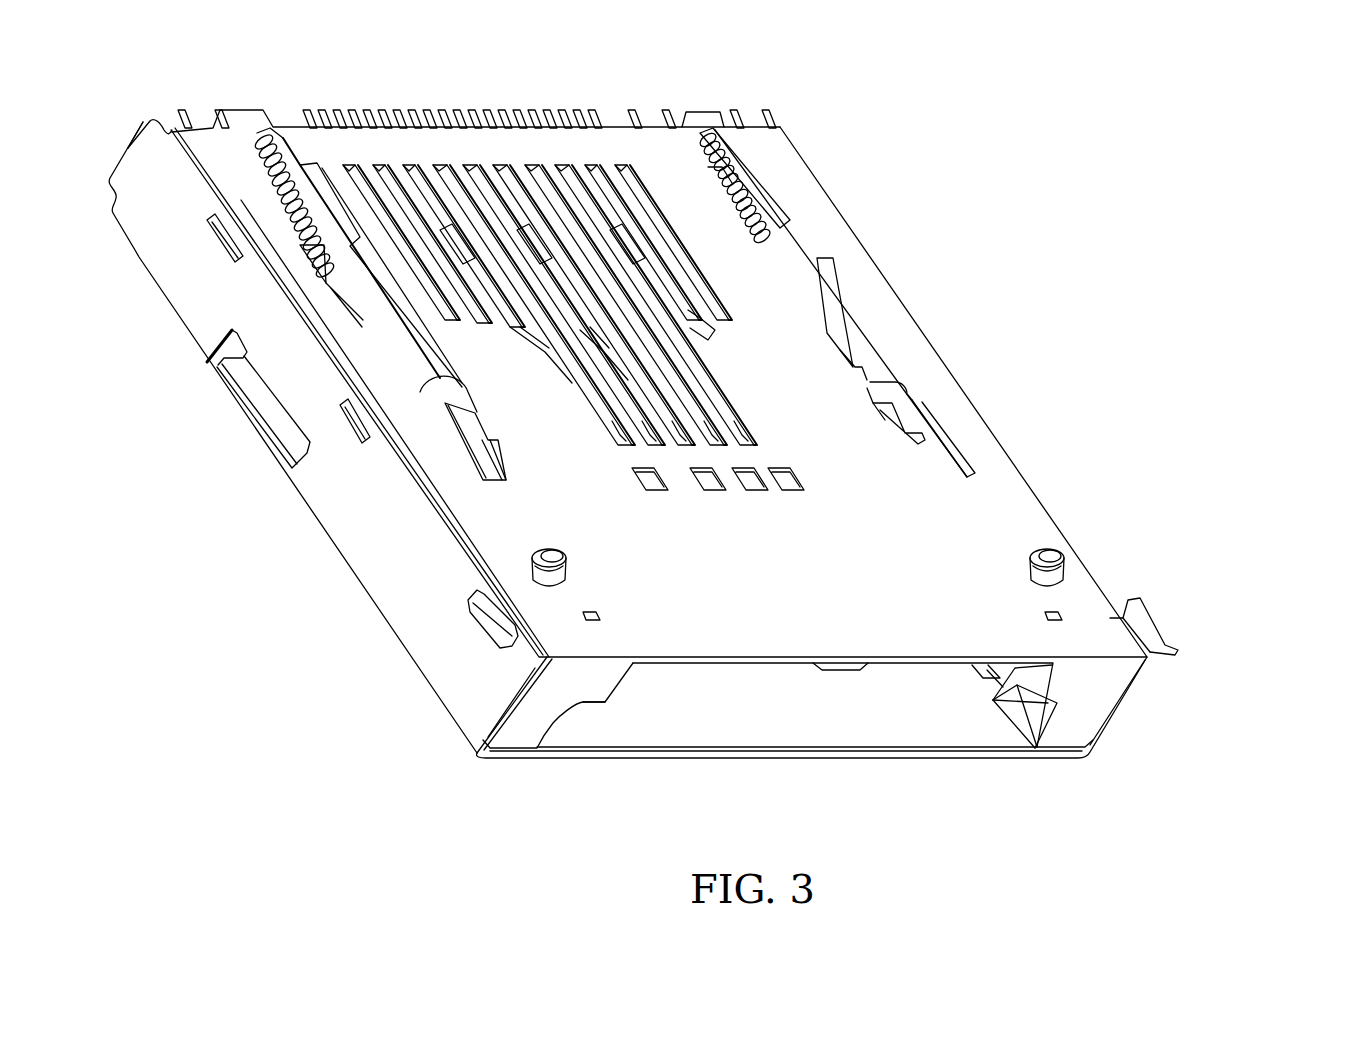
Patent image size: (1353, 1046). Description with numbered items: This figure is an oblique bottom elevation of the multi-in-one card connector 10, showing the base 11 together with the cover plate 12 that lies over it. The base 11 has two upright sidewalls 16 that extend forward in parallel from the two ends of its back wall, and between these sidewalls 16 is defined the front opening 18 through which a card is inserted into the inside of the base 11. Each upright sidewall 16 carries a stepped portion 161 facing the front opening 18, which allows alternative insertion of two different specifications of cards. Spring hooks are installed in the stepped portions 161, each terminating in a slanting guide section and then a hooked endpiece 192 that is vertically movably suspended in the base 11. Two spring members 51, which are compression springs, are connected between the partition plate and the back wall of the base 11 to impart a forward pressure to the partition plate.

The multi-in-one card connector 10 is at (306, 646).
The base 11 is at (897, 282).
The metal shell cover 12 is at (1018, 530).
The upright sidewall 16 is at (538, 705).
The stepped portion 161 is at (592, 702).
The front opening 18 is at (807, 733).
The hooked endpiece 192 is at (463, 417).
The spring member 51 is at (282, 130).